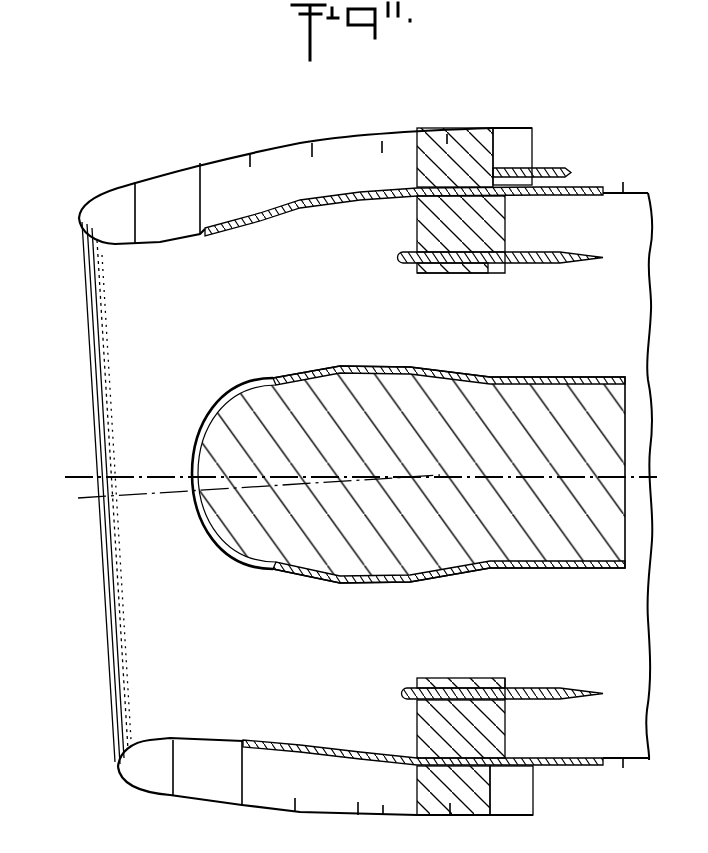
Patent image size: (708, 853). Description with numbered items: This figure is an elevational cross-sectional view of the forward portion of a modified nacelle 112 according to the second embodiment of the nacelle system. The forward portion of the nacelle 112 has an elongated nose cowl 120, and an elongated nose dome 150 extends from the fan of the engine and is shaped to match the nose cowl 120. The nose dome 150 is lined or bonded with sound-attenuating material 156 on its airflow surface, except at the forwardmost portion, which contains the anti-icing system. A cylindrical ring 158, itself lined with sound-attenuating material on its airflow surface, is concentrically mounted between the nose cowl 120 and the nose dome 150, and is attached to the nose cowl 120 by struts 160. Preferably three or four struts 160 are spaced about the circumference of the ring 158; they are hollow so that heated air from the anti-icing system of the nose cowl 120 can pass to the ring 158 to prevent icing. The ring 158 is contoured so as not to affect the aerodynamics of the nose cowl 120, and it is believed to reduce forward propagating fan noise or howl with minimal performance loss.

The nacelle 112 is at (100, 580).
The nose cowl 120 is at (300, 743).
The nose dome 150 is at (283, 573).
The sound-attenuating material 156 is at (357, 757).
The cylindrical ring 158 is at (558, 264).
The struts 160 is at (503, 238).